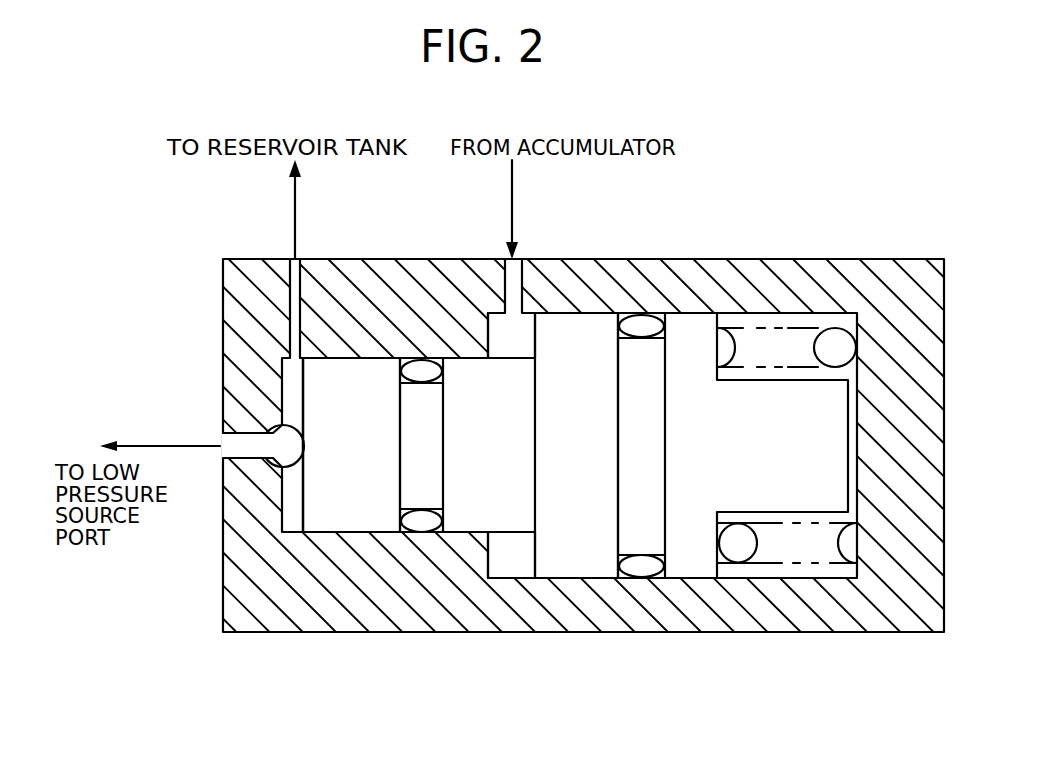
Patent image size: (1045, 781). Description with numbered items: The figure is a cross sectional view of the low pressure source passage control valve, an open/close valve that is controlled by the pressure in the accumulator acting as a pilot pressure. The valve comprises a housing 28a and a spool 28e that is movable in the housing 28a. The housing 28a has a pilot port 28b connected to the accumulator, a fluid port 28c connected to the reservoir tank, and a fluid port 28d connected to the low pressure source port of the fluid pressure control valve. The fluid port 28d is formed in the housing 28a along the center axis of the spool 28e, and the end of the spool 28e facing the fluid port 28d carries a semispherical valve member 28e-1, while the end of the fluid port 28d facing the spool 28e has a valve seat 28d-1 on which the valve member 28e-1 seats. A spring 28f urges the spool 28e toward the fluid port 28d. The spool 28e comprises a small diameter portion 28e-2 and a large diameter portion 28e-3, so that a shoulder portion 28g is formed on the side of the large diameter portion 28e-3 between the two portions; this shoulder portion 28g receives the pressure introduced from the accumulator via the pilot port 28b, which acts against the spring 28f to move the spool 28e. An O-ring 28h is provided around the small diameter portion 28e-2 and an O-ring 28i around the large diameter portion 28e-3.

The housing 28a is at (872, 293).
The pilot port 28b is at (514, 283).
The fluid port 28c is at (291, 306).
The fluid port 28d is at (268, 432).
The valve seat 28d-1 is at (244, 449).
The spool 28e is at (585, 367).
The semispherical valve member 28e-1 is at (300, 474).
The small diameter portion 28e-2 is at (343, 515).
The large diameter portion 28e-3 is at (583, 562).
The spring 28f is at (783, 552).
The shoulder portion 28g is at (533, 547).
The O-ring 28h is at (412, 530).
The O-ring 28i is at (637, 583).